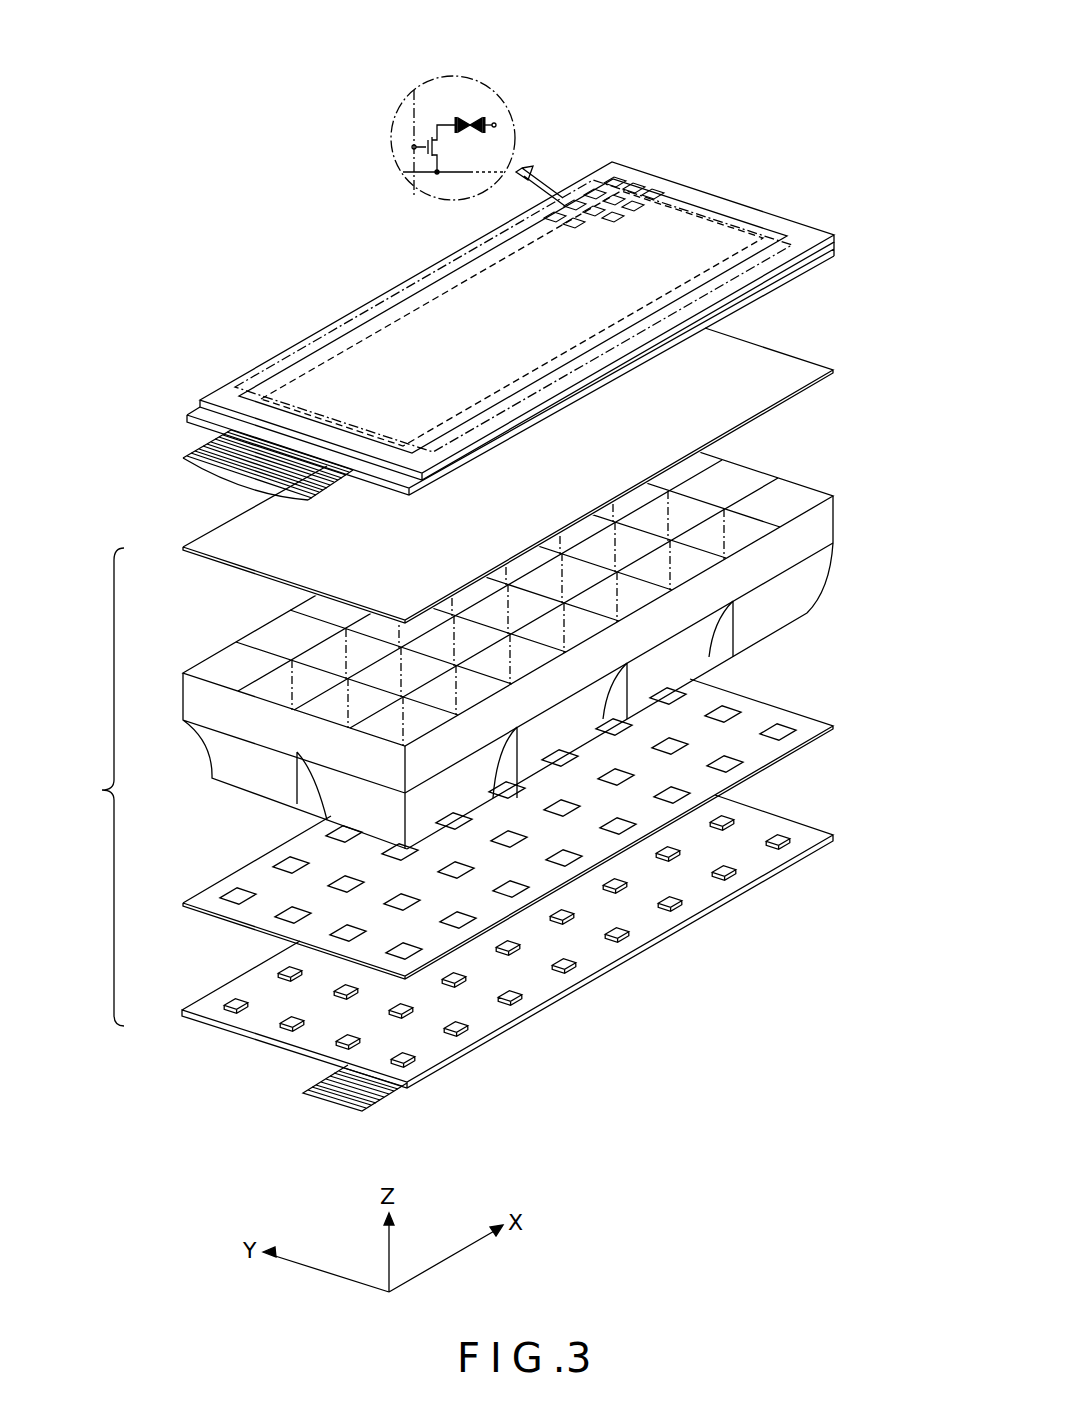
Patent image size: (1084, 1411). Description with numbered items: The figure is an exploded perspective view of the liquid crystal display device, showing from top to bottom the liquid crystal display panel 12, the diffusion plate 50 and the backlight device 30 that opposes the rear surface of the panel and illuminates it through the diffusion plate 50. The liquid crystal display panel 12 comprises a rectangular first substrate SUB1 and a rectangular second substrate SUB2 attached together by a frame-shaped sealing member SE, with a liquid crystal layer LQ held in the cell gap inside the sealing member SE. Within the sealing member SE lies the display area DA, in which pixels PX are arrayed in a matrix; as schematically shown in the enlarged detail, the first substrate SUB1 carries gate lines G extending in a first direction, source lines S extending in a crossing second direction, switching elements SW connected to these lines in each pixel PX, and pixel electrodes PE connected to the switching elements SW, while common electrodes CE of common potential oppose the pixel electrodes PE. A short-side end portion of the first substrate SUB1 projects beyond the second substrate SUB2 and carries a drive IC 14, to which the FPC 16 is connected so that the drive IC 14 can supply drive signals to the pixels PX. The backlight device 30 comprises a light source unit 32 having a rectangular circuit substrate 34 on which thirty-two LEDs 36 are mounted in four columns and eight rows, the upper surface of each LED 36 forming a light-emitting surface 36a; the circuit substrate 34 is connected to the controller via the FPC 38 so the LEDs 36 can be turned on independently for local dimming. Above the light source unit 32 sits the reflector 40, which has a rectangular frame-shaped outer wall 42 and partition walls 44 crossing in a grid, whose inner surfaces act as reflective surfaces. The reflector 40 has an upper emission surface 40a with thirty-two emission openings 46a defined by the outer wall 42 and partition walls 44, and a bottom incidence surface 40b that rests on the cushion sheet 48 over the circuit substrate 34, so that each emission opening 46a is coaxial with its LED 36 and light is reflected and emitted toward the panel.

The liquid crystal display panel 12 is at (476, 282).
The drive IC 14 is at (366, 480).
The FPC 16 is at (192, 450).
The backlight device 30 is at (501, 774).
The light source unit 32 is at (507, 952).
The circuit substrate 34 is at (603, 957).
The LED 36 is at (786, 846).
The light-emitting surface 36a is at (780, 836).
The FPC 38 is at (368, 1093).
The reflector 40 is at (533, 636).
The emission surface 40a is at (735, 640).
The incidence surface 40b is at (808, 610).
The outer wall 42 is at (775, 565).
The partition wall 44 is at (262, 682).
The emission opening 46a is at (745, 478).
The cushion sheet 48 is at (250, 873).
The diffusion plate 50 is at (795, 372).
The first substrate SUB1 is at (184, 419).
The second substrate SUB2 is at (216, 390).
The sealing member SE is at (270, 362).
The display area DA is at (770, 275).
The pixel PX is at (614, 178).
The switching element SW is at (428, 158).
The gate line G is at (413, 104).
The source line S is at (462, 173).
The pixel electrode PE is at (454, 118).
The liquid crystal layer LQ is at (467, 117).
The common electrode CE is at (490, 118).